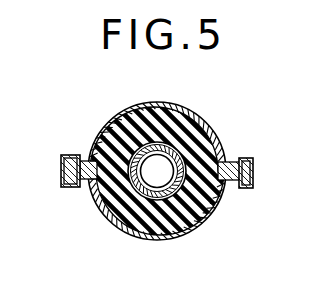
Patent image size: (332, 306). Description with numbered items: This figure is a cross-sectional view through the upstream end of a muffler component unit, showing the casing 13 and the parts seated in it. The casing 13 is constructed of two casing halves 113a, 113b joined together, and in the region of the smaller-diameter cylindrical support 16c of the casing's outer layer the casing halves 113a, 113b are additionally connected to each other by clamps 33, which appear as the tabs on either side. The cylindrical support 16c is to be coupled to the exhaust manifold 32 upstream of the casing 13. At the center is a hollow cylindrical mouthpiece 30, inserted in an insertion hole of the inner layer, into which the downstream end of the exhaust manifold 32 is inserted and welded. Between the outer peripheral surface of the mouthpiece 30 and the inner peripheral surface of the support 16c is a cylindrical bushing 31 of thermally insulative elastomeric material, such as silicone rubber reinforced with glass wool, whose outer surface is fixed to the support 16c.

The casing 13 is at (198, 109).
The cylindrical support 16c is at (88, 163).
The mouthpiece 30 is at (112, 217).
The bushing 31 is at (131, 240).
The exhaust manifold 32 is at (182, 229).
The clamps 33 is at (62, 187).
The casing half 113a is at (216, 133).
The casing half 113b is at (212, 217).